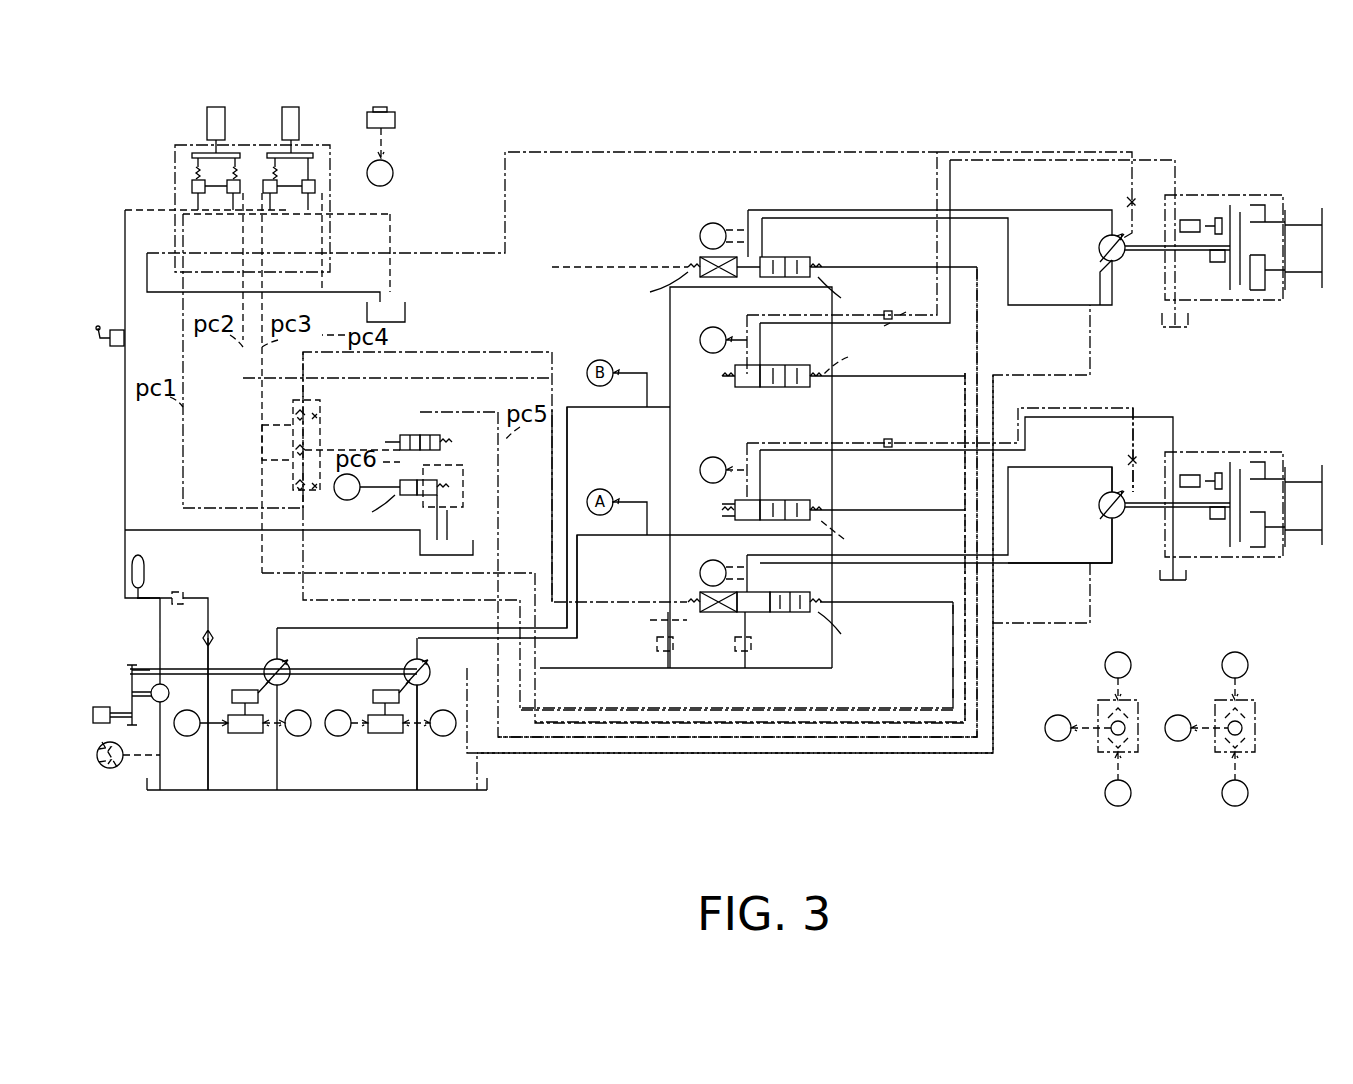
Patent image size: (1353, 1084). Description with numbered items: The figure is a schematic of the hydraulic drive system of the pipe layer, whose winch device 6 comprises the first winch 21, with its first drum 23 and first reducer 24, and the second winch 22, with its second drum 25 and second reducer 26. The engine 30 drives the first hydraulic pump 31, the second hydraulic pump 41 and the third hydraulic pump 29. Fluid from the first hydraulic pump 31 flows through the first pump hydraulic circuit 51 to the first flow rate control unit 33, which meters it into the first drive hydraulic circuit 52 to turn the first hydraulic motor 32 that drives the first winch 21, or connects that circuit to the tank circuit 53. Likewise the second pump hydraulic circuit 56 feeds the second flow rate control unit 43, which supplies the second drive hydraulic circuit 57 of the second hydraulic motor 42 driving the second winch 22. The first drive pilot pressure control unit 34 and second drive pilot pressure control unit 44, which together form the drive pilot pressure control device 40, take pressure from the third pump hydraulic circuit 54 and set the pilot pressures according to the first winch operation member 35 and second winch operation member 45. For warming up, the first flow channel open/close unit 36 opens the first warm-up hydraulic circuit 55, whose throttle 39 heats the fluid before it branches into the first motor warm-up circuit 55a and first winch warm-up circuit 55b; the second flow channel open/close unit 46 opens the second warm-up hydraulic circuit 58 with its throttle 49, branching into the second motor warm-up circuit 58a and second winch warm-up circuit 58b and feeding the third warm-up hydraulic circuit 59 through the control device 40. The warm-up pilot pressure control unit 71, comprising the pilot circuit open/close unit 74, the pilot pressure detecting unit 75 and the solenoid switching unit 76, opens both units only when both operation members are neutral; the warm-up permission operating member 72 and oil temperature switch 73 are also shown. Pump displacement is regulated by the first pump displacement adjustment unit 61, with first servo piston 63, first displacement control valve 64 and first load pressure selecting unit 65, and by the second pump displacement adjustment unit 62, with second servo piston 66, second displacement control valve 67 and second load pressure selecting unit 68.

The winch device 6 is at (1278, 380).
The first winch 21 is at (1262, 568).
The second winch 22 is at (1262, 190).
The first drum 23 is at (1298, 545).
The first reducer 24 is at (1265, 470).
The second drum 25 is at (1298, 288).
The second reducer 26 is at (1260, 300).
The third hydraulic pump 29 is at (158, 684).
The engine 30 is at (107, 707).
The first hydraulic pump 31 is at (405, 662).
The first hydraulic motor 32 is at (1098, 497).
The first flow rate control unit 33 is at (765, 592).
The first drive pilot pressure control unit 34 is at (188, 165).
The first winch operation member 35 is at (207, 118).
The first flow channel open/close unit 36 is at (765, 500).
The throttle 39 is at (892, 450).
The drive pilot pressure control device 40 is at (175, 190).
The second hydraulic pump 41 is at (272, 662).
The second hydraulic motor 42 is at (1098, 240).
The second flow rate control unit 43 is at (765, 277).
The second drive pilot pressure control unit 44 is at (316, 165).
The second winch operation member 45 is at (299, 112).
The second flow channel open/close unit 46 is at (765, 387).
The throttle 49 is at (888, 311).
The first pump hydraulic circuit 51 is at (577, 638).
The first drive hydraulic circuit 52 is at (895, 555).
The tank circuit 53 is at (480, 518).
The third pump hydraulic circuit 54 is at (125, 440).
The first warm-up hydraulic circuit 55 is at (862, 443).
The first motor warm-up circuit 55a is at (1134, 408).
The first winch warm-up circuit 55b is at (1178, 440).
The second pump hydraulic circuit 56 is at (567, 450).
The second drive hydraulic circuit 57 is at (905, 210).
The second warm-up hydraulic circuit 58 is at (880, 315).
The second motor warm-up circuit 58a is at (1138, 160).
The second winch warm-up circuit 58b is at (1178, 170).
The third warm-up hydraulic circuit 59 is at (822, 150).
The first pump displacement adjustment unit 61 is at (398, 740).
The second pump displacement adjustment unit 62 is at (258, 740).
The first servo piston 63 is at (373, 695).
The first displacement control valve 64 is at (380, 733).
The first load pressure selecting unit 65 is at (1138, 710).
The second servo piston 66 is at (235, 690).
The second displacement control valve 67 is at (240, 733).
The second load pressure selecting unit 68 is at (1256, 710).
The warm-up pilot pressure control unit 71 is at (410, 385).
The warm-up permission operating member 72 is at (395, 120).
The oil temperature switch 73 is at (115, 768).
The pilot circuit open/close unit 74 is at (440, 440).
The pilot pressure detecting unit 75 is at (320, 410).
The solenoid switching unit 76 is at (440, 478).